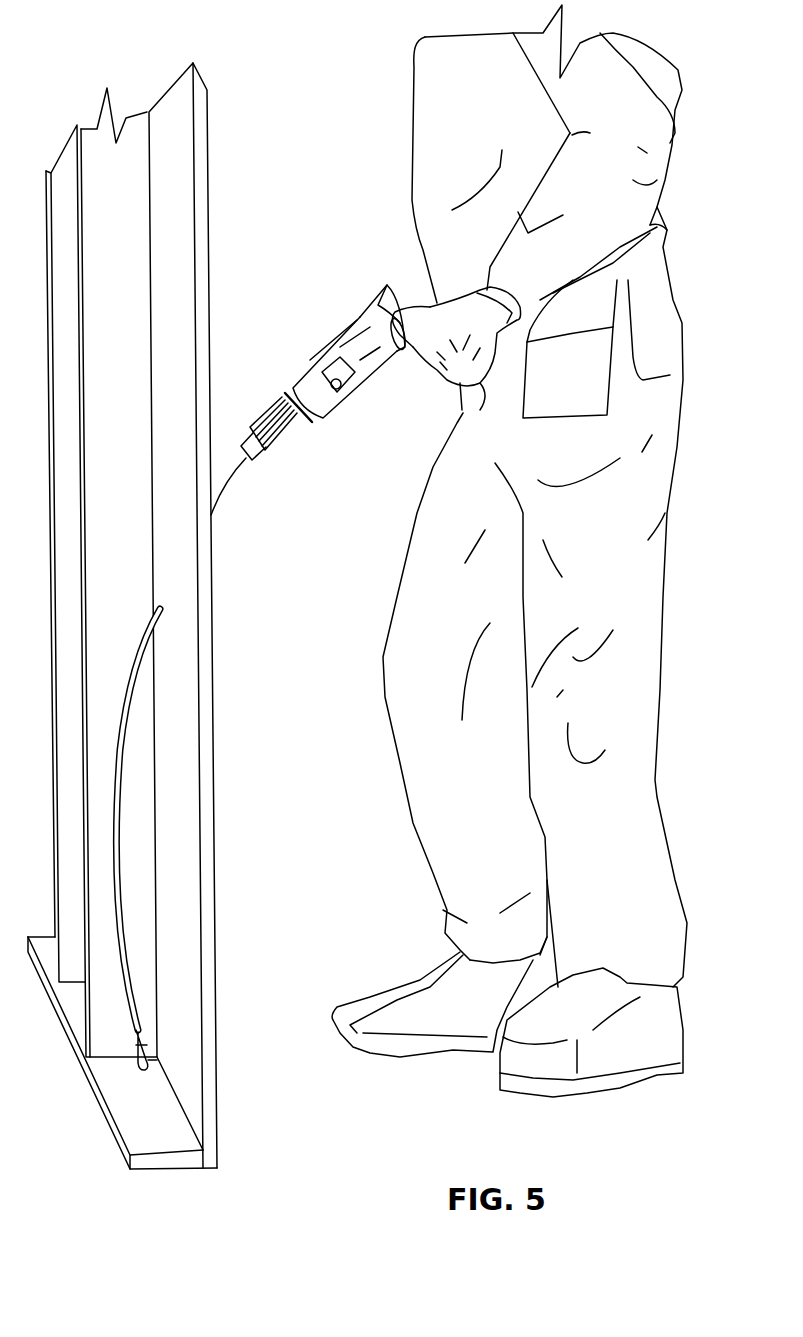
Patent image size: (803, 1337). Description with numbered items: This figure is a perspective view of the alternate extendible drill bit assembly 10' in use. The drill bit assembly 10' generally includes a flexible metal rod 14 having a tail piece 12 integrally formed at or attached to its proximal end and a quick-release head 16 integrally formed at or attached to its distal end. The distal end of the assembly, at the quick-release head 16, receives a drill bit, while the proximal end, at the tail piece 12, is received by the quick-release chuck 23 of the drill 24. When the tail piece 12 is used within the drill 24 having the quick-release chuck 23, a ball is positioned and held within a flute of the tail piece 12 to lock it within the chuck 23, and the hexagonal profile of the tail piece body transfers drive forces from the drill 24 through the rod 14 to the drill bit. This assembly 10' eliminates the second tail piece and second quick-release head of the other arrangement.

The extendible drill bit assembly 10' is at (122, 616).
The tail piece 12 is at (247, 467).
The flexible metal rod 14 is at (123, 877).
The quick-release head 16 is at (157, 1060).
The quick-release chuck 23 is at (285, 445).
The drill 24 is at (330, 347).